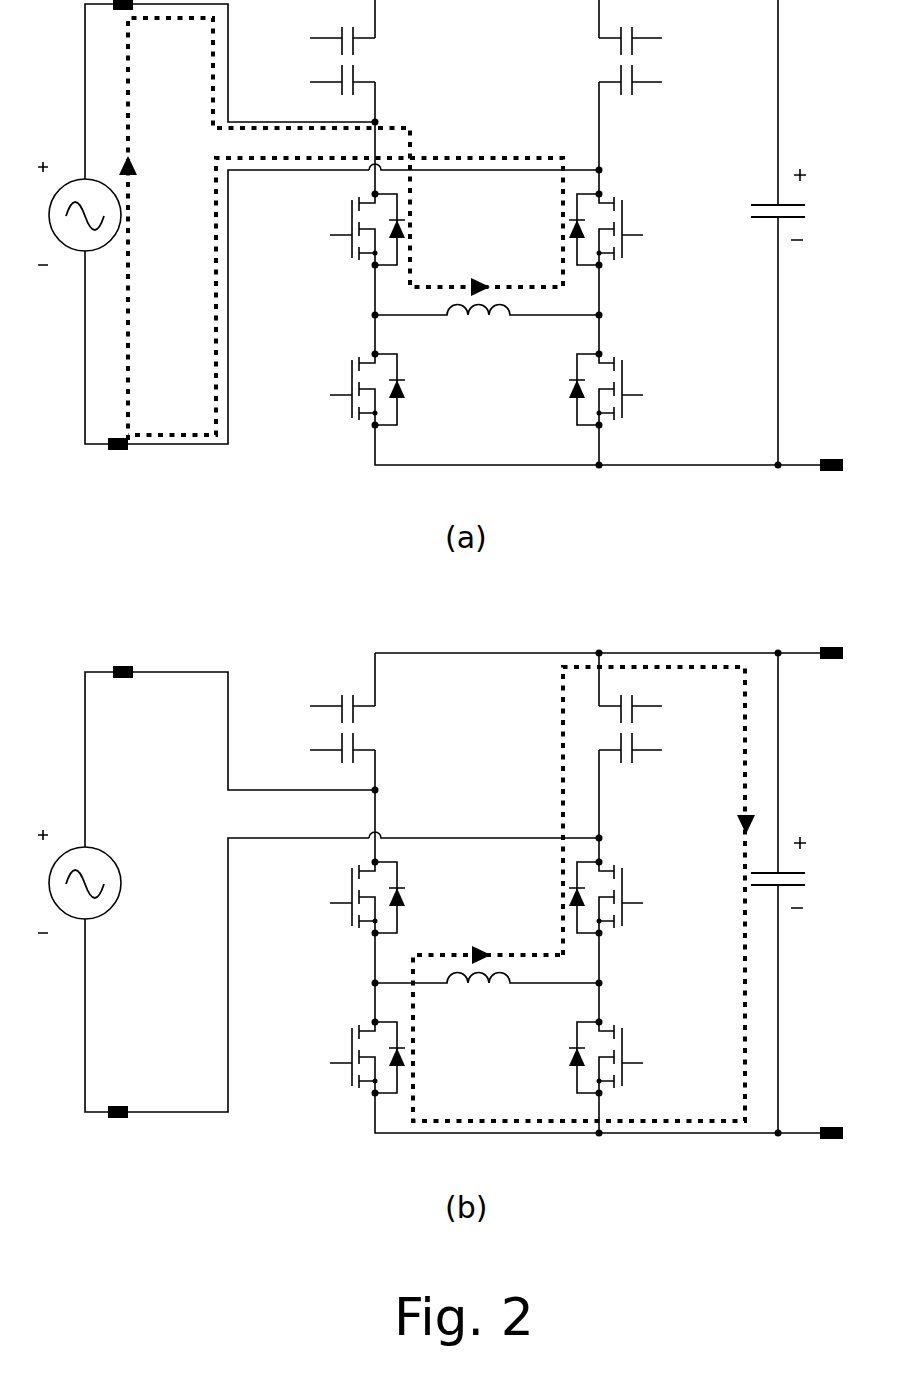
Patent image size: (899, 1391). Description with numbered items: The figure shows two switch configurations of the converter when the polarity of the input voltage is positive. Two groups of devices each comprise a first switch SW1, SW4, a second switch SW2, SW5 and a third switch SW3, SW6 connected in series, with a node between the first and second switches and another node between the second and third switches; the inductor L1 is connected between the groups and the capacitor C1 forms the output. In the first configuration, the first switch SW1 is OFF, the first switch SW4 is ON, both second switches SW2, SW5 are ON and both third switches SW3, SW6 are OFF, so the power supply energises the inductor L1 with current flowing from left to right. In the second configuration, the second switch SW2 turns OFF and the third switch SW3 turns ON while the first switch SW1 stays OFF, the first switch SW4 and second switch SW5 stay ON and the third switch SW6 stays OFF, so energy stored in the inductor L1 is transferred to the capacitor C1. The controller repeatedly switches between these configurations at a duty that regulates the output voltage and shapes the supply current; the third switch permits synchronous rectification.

The first switch SW1 is at (327, 395).
The second switch SW2 is at (345, 564).
The third switch SW3 is at (345, 724).
The first switch SW4 is at (645, 395).
The second switch SW5 is at (627, 564).
The third switch SW6 is at (626, 724).
The inductor L1 is at (487, 663).
The capacitor C1 is at (800, 548).